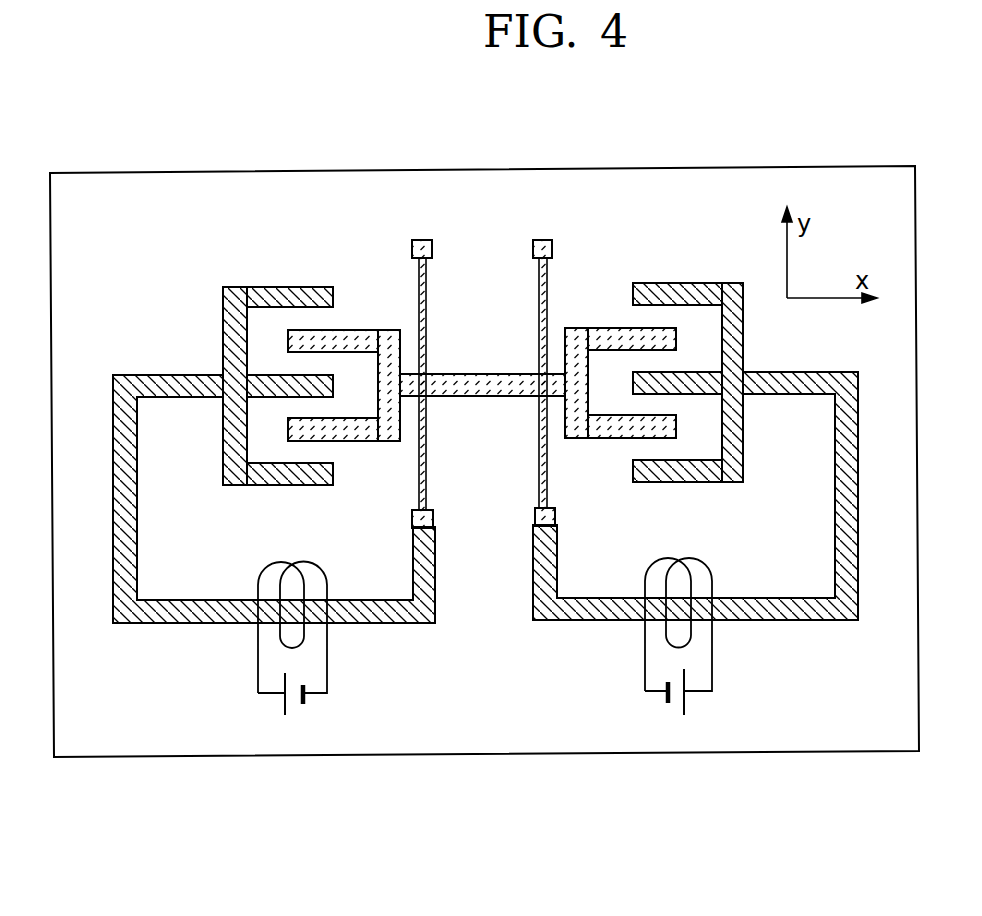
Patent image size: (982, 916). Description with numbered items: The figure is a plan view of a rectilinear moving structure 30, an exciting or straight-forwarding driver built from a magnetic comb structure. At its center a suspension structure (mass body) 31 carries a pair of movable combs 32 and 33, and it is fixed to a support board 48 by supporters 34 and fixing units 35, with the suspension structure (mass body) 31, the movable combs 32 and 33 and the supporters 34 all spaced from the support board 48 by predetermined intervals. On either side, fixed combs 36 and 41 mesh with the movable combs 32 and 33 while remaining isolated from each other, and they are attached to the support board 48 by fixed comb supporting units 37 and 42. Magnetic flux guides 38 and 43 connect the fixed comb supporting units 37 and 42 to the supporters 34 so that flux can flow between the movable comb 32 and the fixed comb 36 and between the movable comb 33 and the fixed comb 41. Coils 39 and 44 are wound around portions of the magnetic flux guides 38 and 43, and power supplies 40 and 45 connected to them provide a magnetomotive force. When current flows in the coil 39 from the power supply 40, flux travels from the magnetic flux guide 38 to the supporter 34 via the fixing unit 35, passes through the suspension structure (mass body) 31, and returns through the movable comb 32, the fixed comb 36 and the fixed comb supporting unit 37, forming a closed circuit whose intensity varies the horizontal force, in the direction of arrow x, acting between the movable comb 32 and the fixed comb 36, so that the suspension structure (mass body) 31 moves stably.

The rectilinear moving structure 30 is at (561, 788).
The suspension structure (mass body) 31 is at (481, 378).
The movable comb 32 is at (363, 430).
The movable comb 33 is at (608, 438).
The supporter 34 is at (423, 457).
The fixing unit 35 is at (432, 517).
The fixed comb 36 is at (283, 293).
The fixed comb supporting unit 37 is at (226, 306).
The magnetic flux guide 38 is at (162, 385).
The coil 39 is at (313, 633).
The power supply 40 is at (308, 698).
The fixed comb 41 is at (662, 293).
The fixed comb supporting unit 42 is at (742, 463).
The magnetic flux guide 43 is at (805, 607).
The coil 44 is at (695, 635).
The power supply 45 is at (690, 703).
The support board 48 is at (238, 757).